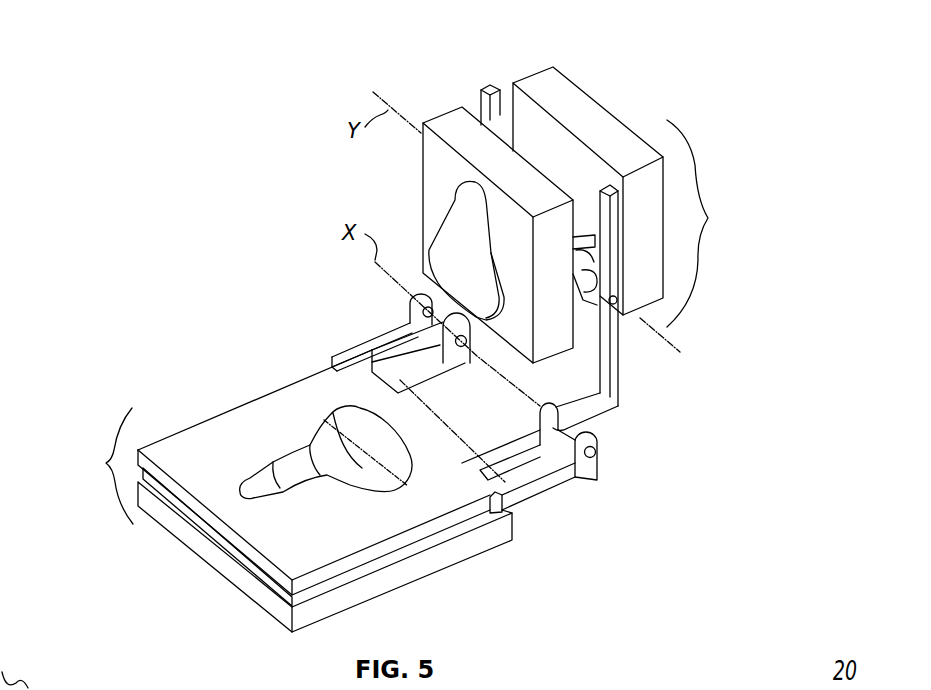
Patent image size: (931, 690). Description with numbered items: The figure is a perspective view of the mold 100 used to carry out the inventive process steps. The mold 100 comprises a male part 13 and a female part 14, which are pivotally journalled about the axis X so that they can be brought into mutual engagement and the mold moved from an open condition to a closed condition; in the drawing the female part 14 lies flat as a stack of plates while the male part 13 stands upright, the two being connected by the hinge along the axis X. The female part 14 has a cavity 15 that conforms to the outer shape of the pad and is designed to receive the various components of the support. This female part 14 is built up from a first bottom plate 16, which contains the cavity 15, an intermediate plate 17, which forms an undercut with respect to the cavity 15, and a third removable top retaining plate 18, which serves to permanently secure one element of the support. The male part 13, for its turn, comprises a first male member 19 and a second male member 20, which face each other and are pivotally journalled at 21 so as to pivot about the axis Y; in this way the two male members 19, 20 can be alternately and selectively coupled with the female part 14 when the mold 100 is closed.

The mold 100 is at (250, 178).
The male part 13 is at (715, 214).
The female part 14 is at (103, 460).
The cavity 15 is at (337, 446).
The first bottom plate 16 is at (225, 567).
The intermediate plate 17 is at (193, 518).
The third removable top retaining plate 18 is at (400, 540).
The first male member 19 is at (557, 332).
The second male member 20 is at (575, 92).
The pivot 21 is at (613, 300).